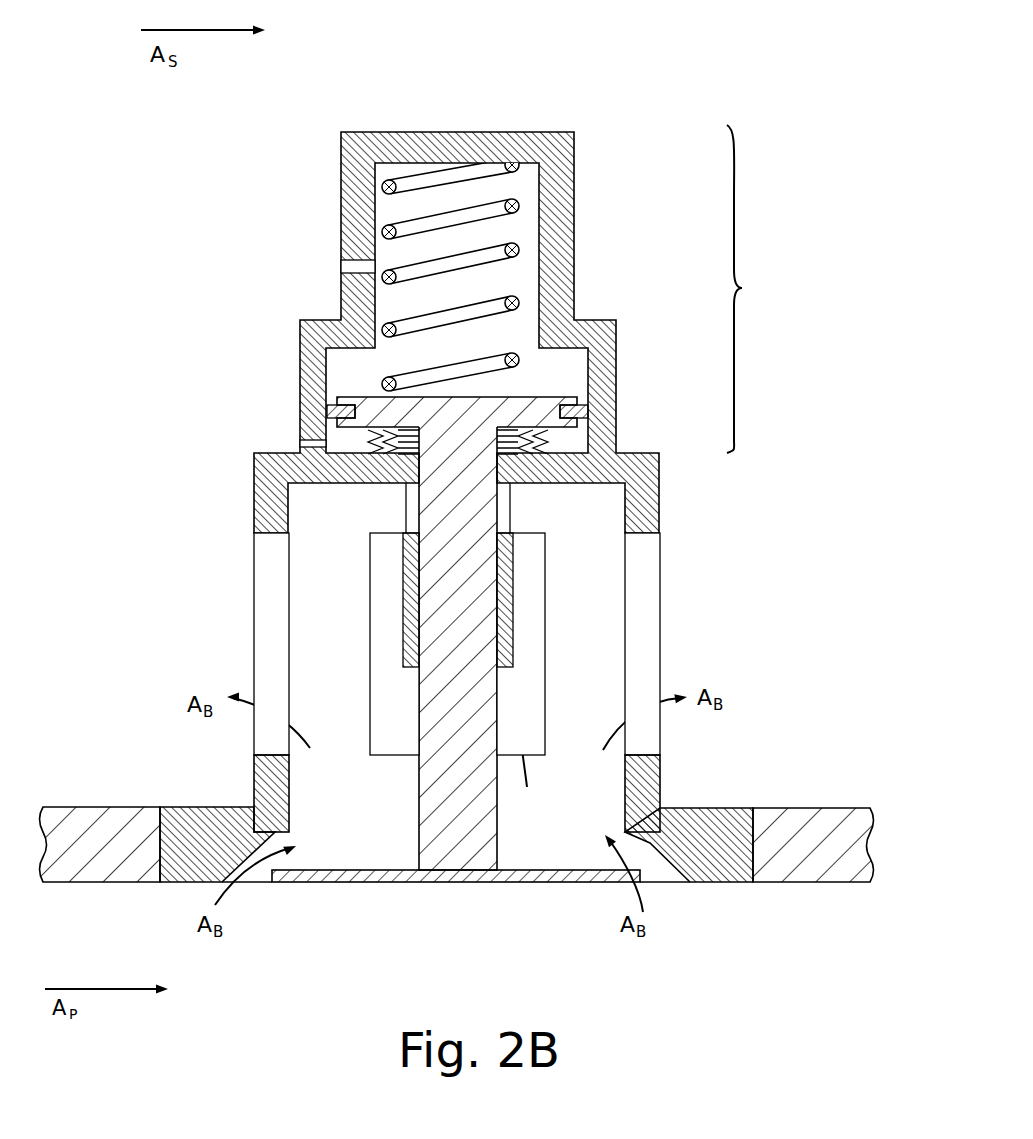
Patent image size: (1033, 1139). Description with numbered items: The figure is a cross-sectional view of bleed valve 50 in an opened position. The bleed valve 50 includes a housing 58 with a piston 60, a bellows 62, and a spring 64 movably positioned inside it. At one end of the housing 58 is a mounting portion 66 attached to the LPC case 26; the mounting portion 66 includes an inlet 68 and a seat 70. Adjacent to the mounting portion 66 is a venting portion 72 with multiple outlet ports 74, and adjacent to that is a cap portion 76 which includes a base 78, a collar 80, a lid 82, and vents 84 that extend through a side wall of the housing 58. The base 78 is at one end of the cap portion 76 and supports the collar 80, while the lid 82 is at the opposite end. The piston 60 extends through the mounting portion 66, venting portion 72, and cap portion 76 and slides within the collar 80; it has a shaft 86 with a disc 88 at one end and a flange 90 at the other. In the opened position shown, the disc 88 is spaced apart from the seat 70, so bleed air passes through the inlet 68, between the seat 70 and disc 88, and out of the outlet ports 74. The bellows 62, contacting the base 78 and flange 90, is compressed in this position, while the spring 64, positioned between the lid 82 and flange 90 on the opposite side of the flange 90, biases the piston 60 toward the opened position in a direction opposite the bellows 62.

The LPC case 26 is at (107, 806).
The bleed valve 50 is at (718, 108).
The housing 58 is at (585, 213).
The piston 60 is at (410, 813).
The bellows 62 is at (368, 441).
The spring 64 is at (450, 372).
The mounting portion 66 is at (725, 882).
The inlet 68 is at (667, 882).
The seat 70 is at (290, 842).
The venting portion 72 is at (665, 771).
The outlet ports 74 is at (661, 537).
The cap portion 76 is at (755, 289).
The base 78 is at (557, 485).
The collar 80 is at (512, 640).
The lid 82 is at (463, 132).
The vents 84 is at (343, 266).
The shaft 86 is at (497, 823).
The disc 88 is at (555, 882).
The flange 90 is at (358, 397).